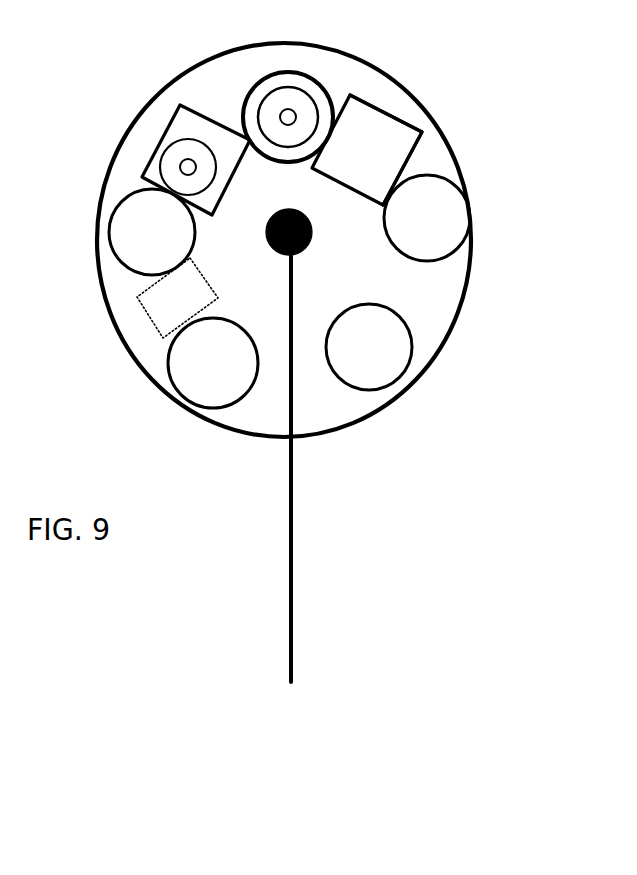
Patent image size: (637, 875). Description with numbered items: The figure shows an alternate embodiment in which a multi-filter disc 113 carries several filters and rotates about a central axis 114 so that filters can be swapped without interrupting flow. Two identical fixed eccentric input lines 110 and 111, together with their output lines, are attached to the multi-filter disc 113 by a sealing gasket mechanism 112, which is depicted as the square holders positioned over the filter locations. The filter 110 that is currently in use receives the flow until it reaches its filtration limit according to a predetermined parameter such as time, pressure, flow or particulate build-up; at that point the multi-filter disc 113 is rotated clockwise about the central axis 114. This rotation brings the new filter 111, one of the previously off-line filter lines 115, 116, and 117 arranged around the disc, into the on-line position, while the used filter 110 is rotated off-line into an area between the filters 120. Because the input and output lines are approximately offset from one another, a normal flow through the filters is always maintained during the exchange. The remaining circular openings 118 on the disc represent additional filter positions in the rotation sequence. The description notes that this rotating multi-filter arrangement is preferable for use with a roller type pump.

The fixed eccentric input line 110 is at (288, 117).
The fixed eccentric input line 111 is at (188, 167).
The sealing gasket mechanism 112 is at (332, 98).
The multi-filter disc 113 is at (458, 316).
The central axis 114 is at (311, 239).
The off-line filter line 115 is at (447, 231).
The off-line filter line 116 is at (385, 368).
The off-line filter line 117 is at (203, 390).
The circular opening 118 is at (128, 237).
The area between the filters 120 is at (395, 152).